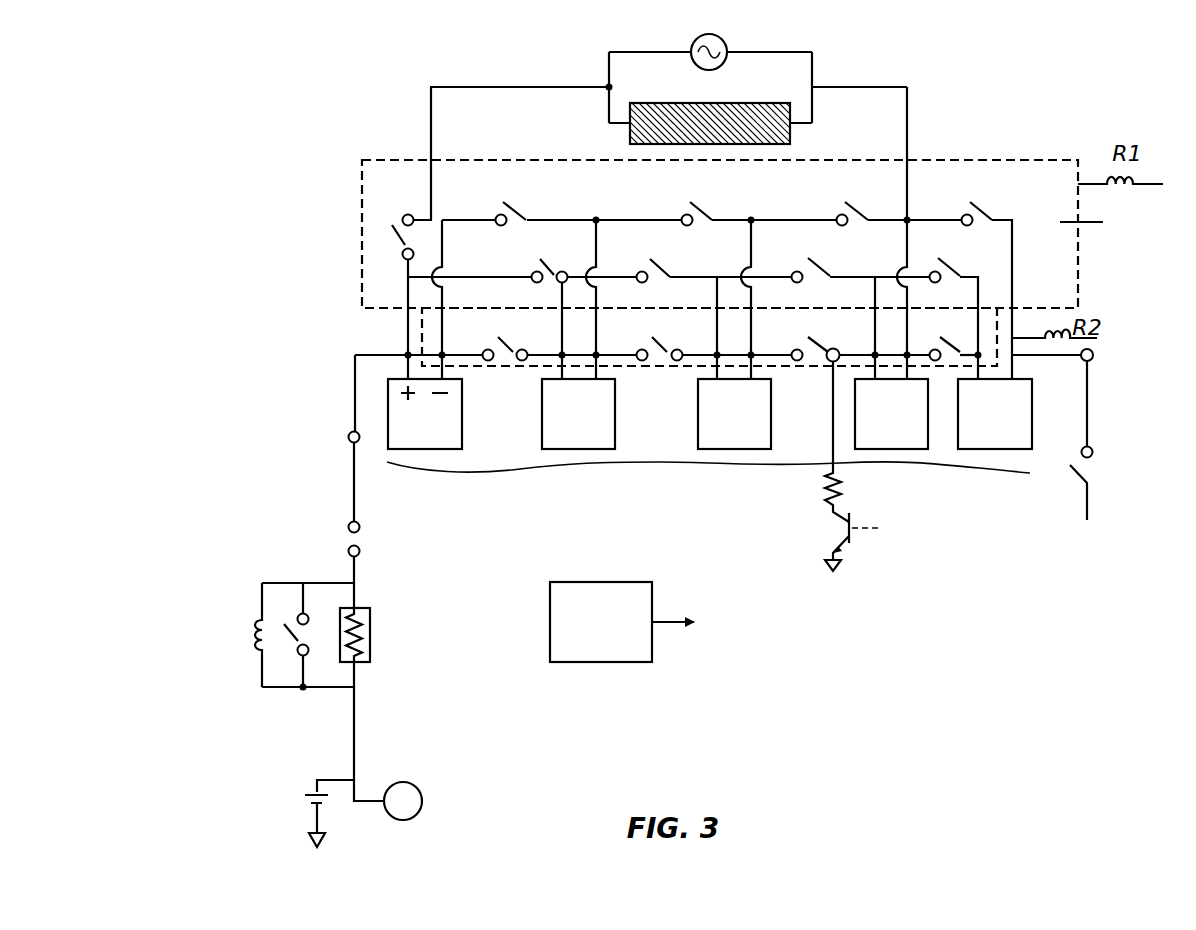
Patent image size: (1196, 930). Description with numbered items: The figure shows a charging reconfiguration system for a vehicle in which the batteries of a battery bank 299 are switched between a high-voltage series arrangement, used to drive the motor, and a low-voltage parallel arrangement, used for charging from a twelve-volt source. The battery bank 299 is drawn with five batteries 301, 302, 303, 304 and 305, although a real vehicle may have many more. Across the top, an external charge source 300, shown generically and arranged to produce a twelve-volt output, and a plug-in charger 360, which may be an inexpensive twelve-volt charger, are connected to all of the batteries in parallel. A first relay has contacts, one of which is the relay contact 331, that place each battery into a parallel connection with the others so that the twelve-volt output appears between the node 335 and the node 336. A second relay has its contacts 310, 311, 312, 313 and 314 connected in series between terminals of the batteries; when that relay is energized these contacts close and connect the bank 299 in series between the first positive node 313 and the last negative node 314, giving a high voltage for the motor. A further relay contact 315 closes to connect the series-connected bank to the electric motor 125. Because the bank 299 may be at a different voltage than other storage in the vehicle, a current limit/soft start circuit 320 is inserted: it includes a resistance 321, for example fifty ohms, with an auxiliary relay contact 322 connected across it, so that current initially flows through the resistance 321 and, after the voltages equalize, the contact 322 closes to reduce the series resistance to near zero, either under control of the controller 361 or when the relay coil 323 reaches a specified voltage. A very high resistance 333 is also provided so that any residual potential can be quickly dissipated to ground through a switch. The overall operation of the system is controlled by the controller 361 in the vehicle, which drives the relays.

The plug-in charger 360 is at (710, 33).
The external charge source 300 is at (680, 100).
The node 335 is at (408, 213).
The relay contact 331 is at (397, 213).
The auxiliary relay contact 322 is at (500, 212).
The node 336 is at (908, 214).
The relay contact 310 is at (515, 368).
The relay contact 311 is at (668, 368).
The relay contact 312 is at (818, 368).
The first positive node 313 is at (349, 436).
The last negative node 314 is at (1094, 357).
The battery 301 is at (444, 435).
The battery 302 is at (597, 435).
The battery 303 is at (753, 435).
The battery 304 is at (911, 435).
The battery 305 is at (1014, 435).
The battery bank 299 is at (505, 473).
The resistance 333 is at (843, 495).
The relay contact 315 is at (343, 533).
The relay coil 323 is at (247, 625).
The current limit/soft start circuit 320 is at (275, 689).
The resistance 321 is at (370, 633).
The electric motor 125 is at (403, 782).
The controller 361 is at (580, 582).